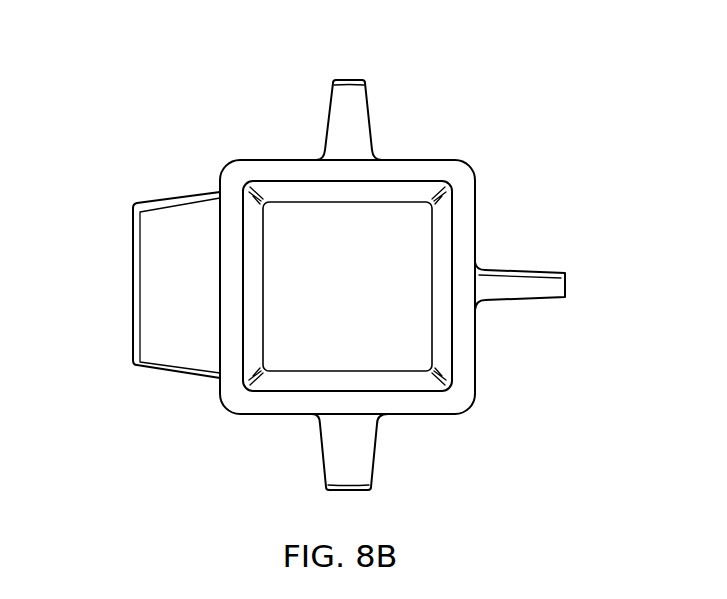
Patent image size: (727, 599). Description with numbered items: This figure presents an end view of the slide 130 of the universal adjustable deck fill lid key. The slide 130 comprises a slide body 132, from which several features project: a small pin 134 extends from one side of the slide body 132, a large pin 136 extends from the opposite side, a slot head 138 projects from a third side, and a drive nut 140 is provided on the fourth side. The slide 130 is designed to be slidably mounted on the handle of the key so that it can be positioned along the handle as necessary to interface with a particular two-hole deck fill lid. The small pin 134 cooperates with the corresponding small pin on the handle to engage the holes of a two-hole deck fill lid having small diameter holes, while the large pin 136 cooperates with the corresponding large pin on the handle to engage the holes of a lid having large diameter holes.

The slide 130 is at (262, 100).
The slide body 132 is at (252, 416).
The small pin 134 is at (366, 102).
The large pin 136 is at (372, 462).
The slot head 138 is at (527, 272).
The drive nut 140 is at (132, 228).